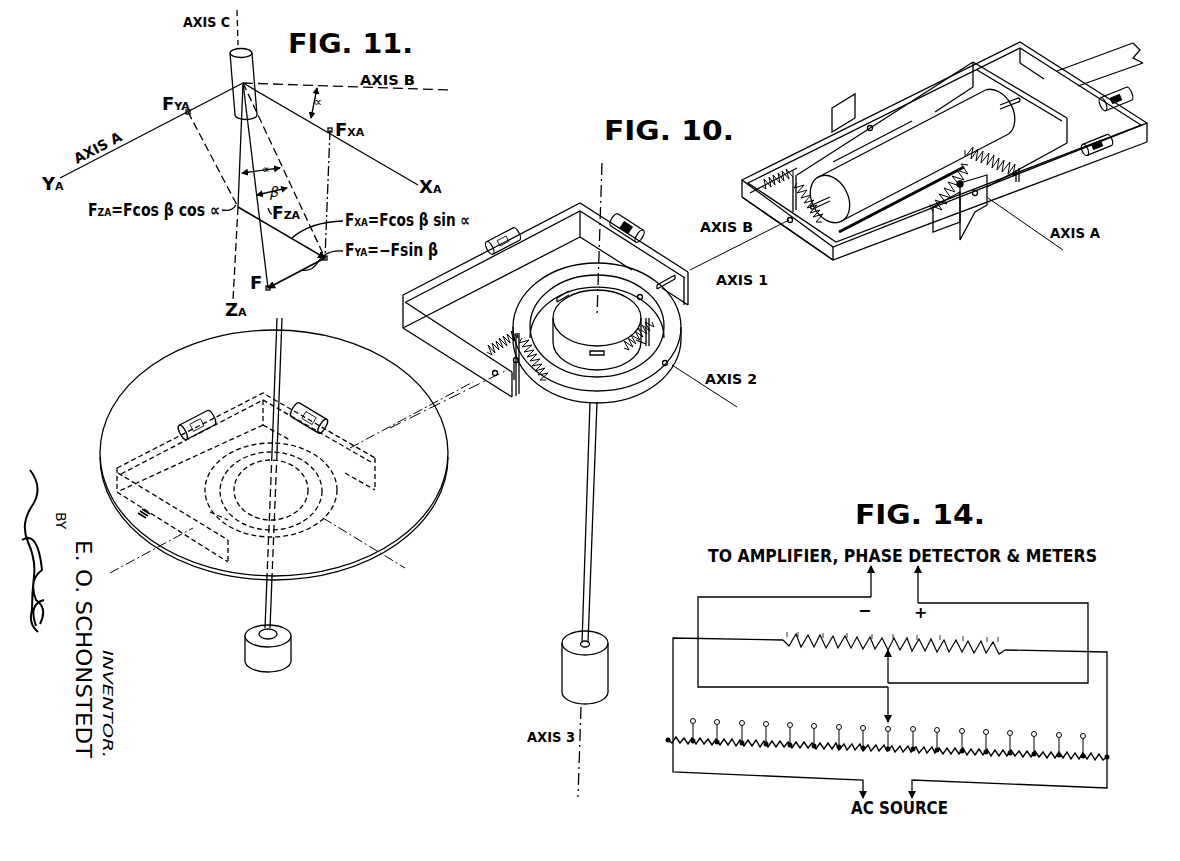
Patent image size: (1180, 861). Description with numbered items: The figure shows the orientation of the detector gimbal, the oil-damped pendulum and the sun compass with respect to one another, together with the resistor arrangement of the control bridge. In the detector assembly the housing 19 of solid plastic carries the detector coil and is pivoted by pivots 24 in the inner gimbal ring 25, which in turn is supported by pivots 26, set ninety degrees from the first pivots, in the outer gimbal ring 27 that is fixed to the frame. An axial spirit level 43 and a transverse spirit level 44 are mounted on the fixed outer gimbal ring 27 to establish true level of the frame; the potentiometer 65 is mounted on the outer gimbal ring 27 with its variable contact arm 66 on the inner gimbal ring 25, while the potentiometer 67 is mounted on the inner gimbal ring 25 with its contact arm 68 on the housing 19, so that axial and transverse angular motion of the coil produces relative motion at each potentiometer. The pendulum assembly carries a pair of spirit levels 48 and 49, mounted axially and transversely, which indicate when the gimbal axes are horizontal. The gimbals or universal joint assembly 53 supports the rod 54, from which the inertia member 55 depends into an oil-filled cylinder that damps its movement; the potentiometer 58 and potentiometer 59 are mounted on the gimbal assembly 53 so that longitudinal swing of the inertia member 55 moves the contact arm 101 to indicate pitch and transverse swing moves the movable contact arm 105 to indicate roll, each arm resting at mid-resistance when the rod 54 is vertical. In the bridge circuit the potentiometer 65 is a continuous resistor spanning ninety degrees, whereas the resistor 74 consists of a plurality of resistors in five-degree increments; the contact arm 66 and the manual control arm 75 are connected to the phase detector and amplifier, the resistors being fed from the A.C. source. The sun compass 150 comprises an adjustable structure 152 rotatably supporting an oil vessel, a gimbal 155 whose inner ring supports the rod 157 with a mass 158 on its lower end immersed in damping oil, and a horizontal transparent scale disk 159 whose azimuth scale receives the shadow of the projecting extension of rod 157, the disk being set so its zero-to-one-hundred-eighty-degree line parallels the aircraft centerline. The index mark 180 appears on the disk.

In FIG. 10, the housing 19 is at (937, 120).
In FIG. 10, the pivots 24 is at (790, 223).
In FIG. 10, the inner gimbal ring 25 is at (849, 246).
In FIG. 10, the pivots 26 is at (855, 112).
In FIG. 10, the outer gimbal ring 27 is at (1000, 52).
In FIG. 10, the axial spirit level 43 is at (1100, 156).
In FIG. 10, the transverse spirit level 44 is at (1131, 97).
In FIG. 10, the spirit level 48 is at (511, 231).
In FIG. 10, the spirit level 49 is at (640, 232).
In FIG. 10, the gimbals or universal joint assembly 53 is at (571, 402).
In FIG. 10, the rod 54 is at (584, 525).
In FIG. 10, the inertia member 55 is at (562, 673).
In FIG. 10, the potentiometer 58 is at (628, 336).
In FIG. 10, the potentiometer 59 is at (501, 333).
In FIG. 10, the potentiometer 65 is at (936, 160).
In FIG. 14, the potentiometer 65 is at (853, 644).
In FIG. 10, the variable contact arm 66 is at (970, 151).
In FIG. 14, the variable contact arm 66 is at (892, 667).
In FIG. 10, the potentiometer 67 is at (778, 175).
In FIG. 10, the contact arm 68 is at (806, 223).
In FIG. 14, the resistor 74 is at (928, 753).
In FIG. 14, the manual control arm 75 is at (890, 705).
In FIG. 10, the contact arm 101 is at (512, 346).
In FIG. 10, the movable contact arm 105 is at (650, 340).
In FIG. 11, the sun compass 150 is at (350, 568).
In FIG. 11, the adjustable structure 152 is at (203, 552).
In FIG. 11, the gimbal 155 is at (302, 534).
In FIG. 11, the rod 157 is at (283, 322).
In FIG. 11, the mass 158 is at (291, 637).
In FIG. 11, the disk 159 is at (143, 372).
In FIG. 11, the index mark 180 is at (136, 516).